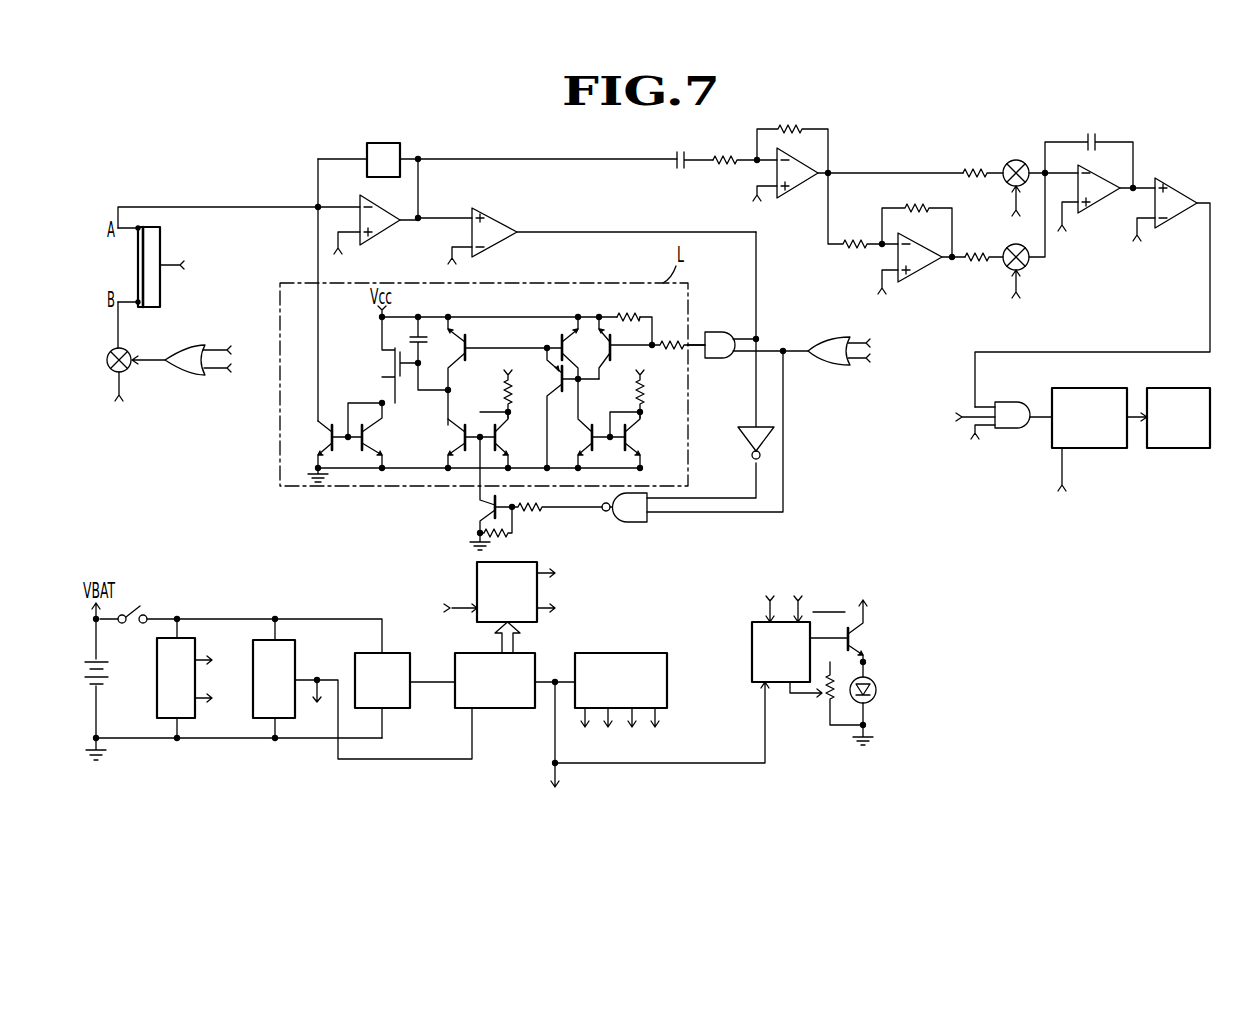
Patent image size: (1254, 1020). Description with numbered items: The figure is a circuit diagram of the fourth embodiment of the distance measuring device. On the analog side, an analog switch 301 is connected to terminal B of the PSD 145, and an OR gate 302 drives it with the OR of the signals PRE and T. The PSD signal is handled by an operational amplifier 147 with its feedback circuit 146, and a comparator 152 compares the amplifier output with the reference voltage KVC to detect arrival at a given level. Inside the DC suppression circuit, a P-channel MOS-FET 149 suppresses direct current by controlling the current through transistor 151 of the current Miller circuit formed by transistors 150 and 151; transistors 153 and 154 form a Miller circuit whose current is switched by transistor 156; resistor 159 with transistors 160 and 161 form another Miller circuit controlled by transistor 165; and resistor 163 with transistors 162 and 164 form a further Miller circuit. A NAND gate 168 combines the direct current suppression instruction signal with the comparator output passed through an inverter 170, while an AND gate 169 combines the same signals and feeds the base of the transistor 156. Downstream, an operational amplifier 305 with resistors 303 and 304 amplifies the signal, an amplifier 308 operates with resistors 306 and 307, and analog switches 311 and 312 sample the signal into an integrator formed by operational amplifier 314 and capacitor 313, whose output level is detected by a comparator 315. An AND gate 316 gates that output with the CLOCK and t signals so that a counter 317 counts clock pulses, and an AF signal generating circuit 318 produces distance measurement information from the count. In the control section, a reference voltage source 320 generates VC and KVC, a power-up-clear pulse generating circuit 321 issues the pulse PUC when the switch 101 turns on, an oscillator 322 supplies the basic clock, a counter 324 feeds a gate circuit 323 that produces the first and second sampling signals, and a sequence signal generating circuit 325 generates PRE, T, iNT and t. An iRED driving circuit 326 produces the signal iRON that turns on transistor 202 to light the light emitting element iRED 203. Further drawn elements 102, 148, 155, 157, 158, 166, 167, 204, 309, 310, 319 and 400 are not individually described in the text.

The switch 101 is at (157, 582).
The battery 102 is at (110, 673).
The PSD 145 is at (138, 276).
The feedback circuit 146 is at (372, 143).
The operational amplifier 147 is at (389, 240).
The capacitor 148 is at (430, 345).
The P-channel MOS-FET 149 is at (389, 363).
The transistor 150 is at (330, 430).
The transistor 151 is at (376, 437).
The comparator 152 is at (496, 217).
The transistor 153 is at (470, 342).
The transistor 154 is at (558, 342).
The transistor 155 is at (548, 390).
The transistor 156 is at (608, 362).
The resistor 157 is at (622, 313).
The resistor 158 is at (671, 341).
The resistor 159 is at (502, 393).
The transistor 160 is at (455, 440).
The transistor 161 is at (502, 440).
The transistor 162 is at (572, 440).
The resistor 163 is at (650, 394).
The transistor 164 is at (640, 444).
The transistor 165 is at (483, 501).
The resistor 166 is at (503, 538).
The resistor 167 is at (535, 512).
The NAND gate 168 is at (637, 522).
The AND gate 169 is at (725, 332).
The inverter 170 is at (745, 425).
The transistor 202 is at (863, 640).
The light emitting element iRED 203 is at (877, 690).
The variable resistor 204 is at (822, 703).
The analog switch 301 is at (131, 351).
The OR gate 302 is at (187, 378).
The resistor 303 is at (724, 170).
The resistor 304 is at (795, 124).
The operational amplifier 305 is at (795, 196).
The resistor 306 is at (853, 250).
The resistor 307 is at (905, 204).
The amplifier 308 is at (925, 270).
The resistor 309 is at (977, 168).
The resistor 310 is at (978, 252).
The analog switch 311 is at (1019, 160).
The analog switch 312 is at (1028, 268).
The capacitor 313 is at (1097, 152).
The operational amplifier 314 is at (1098, 205).
The comparator 315 is at (1175, 188).
The AND gate 316 is at (1012, 430).
The counter 317 is at (1098, 448).
The AF signal generating circuit 318 is at (1182, 448).
The OR gate 319 is at (836, 368).
The reference voltage source 320 is at (157, 682).
The power-up-clear pulse generating circuit 321 is at (300, 652).
The oscillator 322 is at (392, 653).
The gate circuit 323 is at (477, 584).
The counter 324 is at (504, 710).
The sequence signal generating circuit 325 is at (636, 653).
The iRED driving circuit 326 is at (752, 640).
The capacitor 400 is at (676, 172).